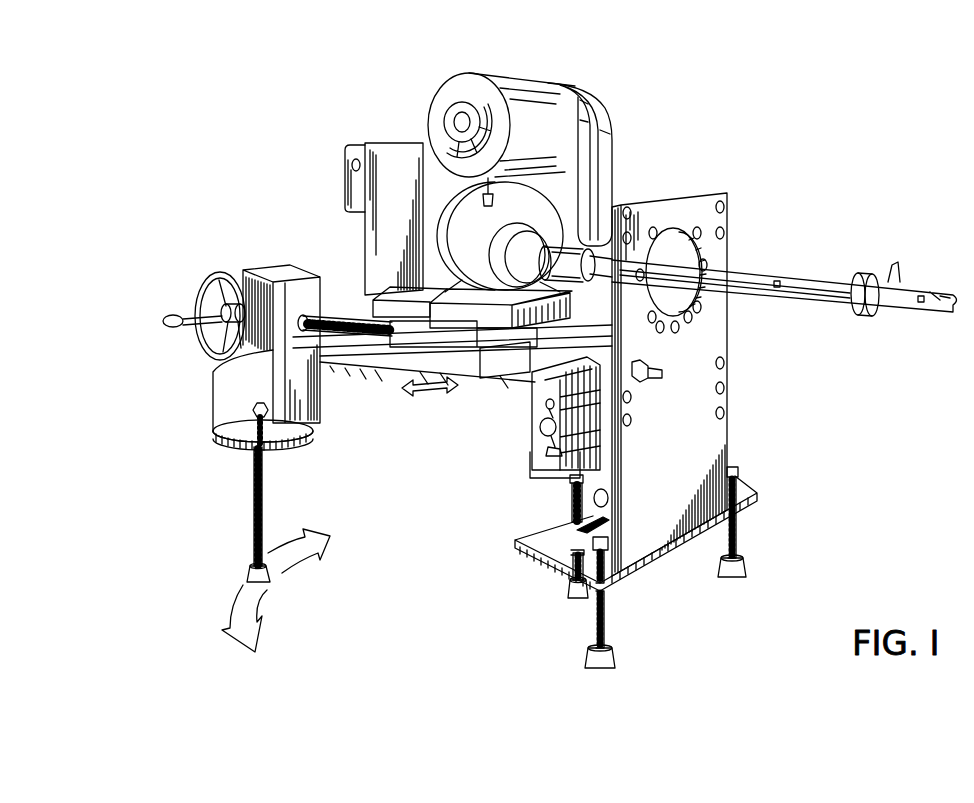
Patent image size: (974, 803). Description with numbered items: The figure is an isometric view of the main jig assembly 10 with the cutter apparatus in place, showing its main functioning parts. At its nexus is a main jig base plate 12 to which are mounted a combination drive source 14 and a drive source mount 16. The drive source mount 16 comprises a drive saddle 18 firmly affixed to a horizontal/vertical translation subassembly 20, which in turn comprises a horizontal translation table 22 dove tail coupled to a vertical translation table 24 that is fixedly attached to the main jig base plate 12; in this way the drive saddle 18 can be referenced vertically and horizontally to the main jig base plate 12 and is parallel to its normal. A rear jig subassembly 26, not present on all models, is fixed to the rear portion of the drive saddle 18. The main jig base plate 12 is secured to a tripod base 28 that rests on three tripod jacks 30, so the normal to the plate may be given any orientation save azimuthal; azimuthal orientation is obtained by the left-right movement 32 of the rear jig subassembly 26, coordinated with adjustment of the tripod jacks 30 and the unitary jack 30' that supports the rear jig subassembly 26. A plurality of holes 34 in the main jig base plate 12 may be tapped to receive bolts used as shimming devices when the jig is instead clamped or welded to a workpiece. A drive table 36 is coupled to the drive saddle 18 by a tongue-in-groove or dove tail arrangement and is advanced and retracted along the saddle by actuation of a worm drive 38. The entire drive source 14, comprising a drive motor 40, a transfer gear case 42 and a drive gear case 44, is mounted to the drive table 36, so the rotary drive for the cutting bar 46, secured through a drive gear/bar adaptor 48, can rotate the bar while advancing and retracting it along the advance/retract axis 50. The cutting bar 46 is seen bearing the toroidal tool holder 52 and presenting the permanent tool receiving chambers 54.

The main jig assembly 10 is at (568, 50).
The main jig base plate 12 is at (677, 491).
The drive source 14 is at (513, 65).
The drive source mount 16 is at (407, 340).
The drive saddle 18 is at (513, 370).
The horizontal/vertical translation subassembly 20 is at (527, 418).
The horizontal translation table 22 is at (537, 448).
The vertical translation table 24 is at (607, 504).
The rear jig subassembly 26 is at (227, 397).
The tripod base 28 is at (550, 535).
The tripod jacks 30 is at (657, 567).
The unitary jack 30' is at (233, 514).
The left-right movement 32 is at (282, 573).
The holes 34 is at (632, 212).
The drive table 36 is at (410, 286).
The worm drive 38 is at (342, 320).
The drive motor 40 is at (548, 137).
The transfer gear case 42 is at (603, 172).
The drive gear case 44 is at (525, 216).
The cutting bar 46 is at (830, 295).
The drive gear/bar adaptor 48 is at (563, 288).
The advance/retract axis 50 is at (433, 397).
The toroidal tool holder 52 is at (862, 273).
The permanent tool receiving chambers 54 is at (777, 285).